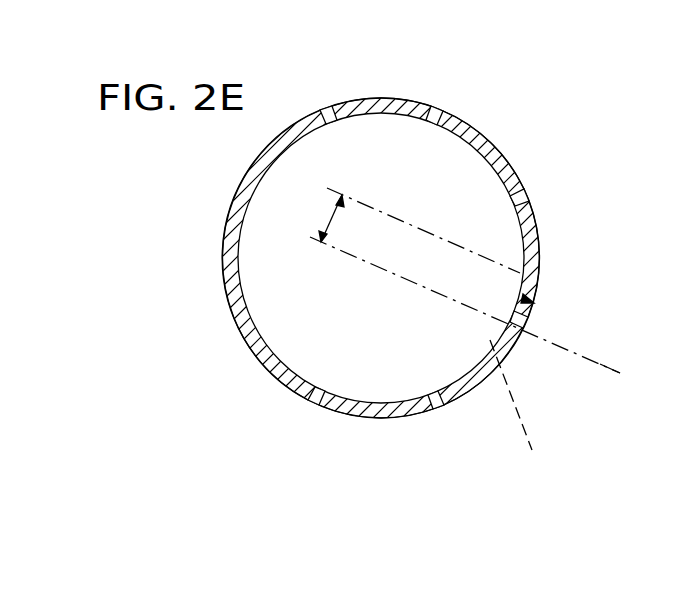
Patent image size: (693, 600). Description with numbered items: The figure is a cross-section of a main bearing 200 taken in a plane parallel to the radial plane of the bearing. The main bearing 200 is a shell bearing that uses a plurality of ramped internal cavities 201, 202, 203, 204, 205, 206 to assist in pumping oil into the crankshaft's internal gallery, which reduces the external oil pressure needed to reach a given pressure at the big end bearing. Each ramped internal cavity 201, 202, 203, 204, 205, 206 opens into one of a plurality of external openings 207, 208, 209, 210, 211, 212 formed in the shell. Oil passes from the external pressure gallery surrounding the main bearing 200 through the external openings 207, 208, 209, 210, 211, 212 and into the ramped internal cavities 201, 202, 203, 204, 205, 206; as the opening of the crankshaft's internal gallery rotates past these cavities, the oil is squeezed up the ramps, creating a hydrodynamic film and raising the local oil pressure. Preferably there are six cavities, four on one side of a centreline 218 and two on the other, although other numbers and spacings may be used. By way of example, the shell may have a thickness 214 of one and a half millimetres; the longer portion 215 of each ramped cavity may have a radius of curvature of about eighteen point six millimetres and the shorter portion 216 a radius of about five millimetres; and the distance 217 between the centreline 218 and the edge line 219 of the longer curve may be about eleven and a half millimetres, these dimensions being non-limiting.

The main bearing 200 is at (219, 258).
The ramped internal cavity 201 is at (323, 124).
The ramped internal cavity 202 is at (429, 116).
The ramped internal cavity 203 is at (520, 205).
The ramped internal cavity 204 is at (515, 325).
The ramped internal cavity 205 is at (423, 397).
The ramped internal cavity 206 is at (312, 387).
The external opening 207 is at (335, 103).
The external opening 208 is at (455, 114).
The external opening 209 is at (527, 208).
The external opening 210 is at (513, 331).
The external opening 211 is at (427, 407).
The external opening 212 is at (303, 402).
The thickness 214 is at (602, 370).
The longer portion 215 is at (532, 303).
The shorter portion 216 is at (513, 398).
The distance 217 is at (335, 216).
The centreline 218 is at (340, 247).
The edge line 219 is at (374, 205).